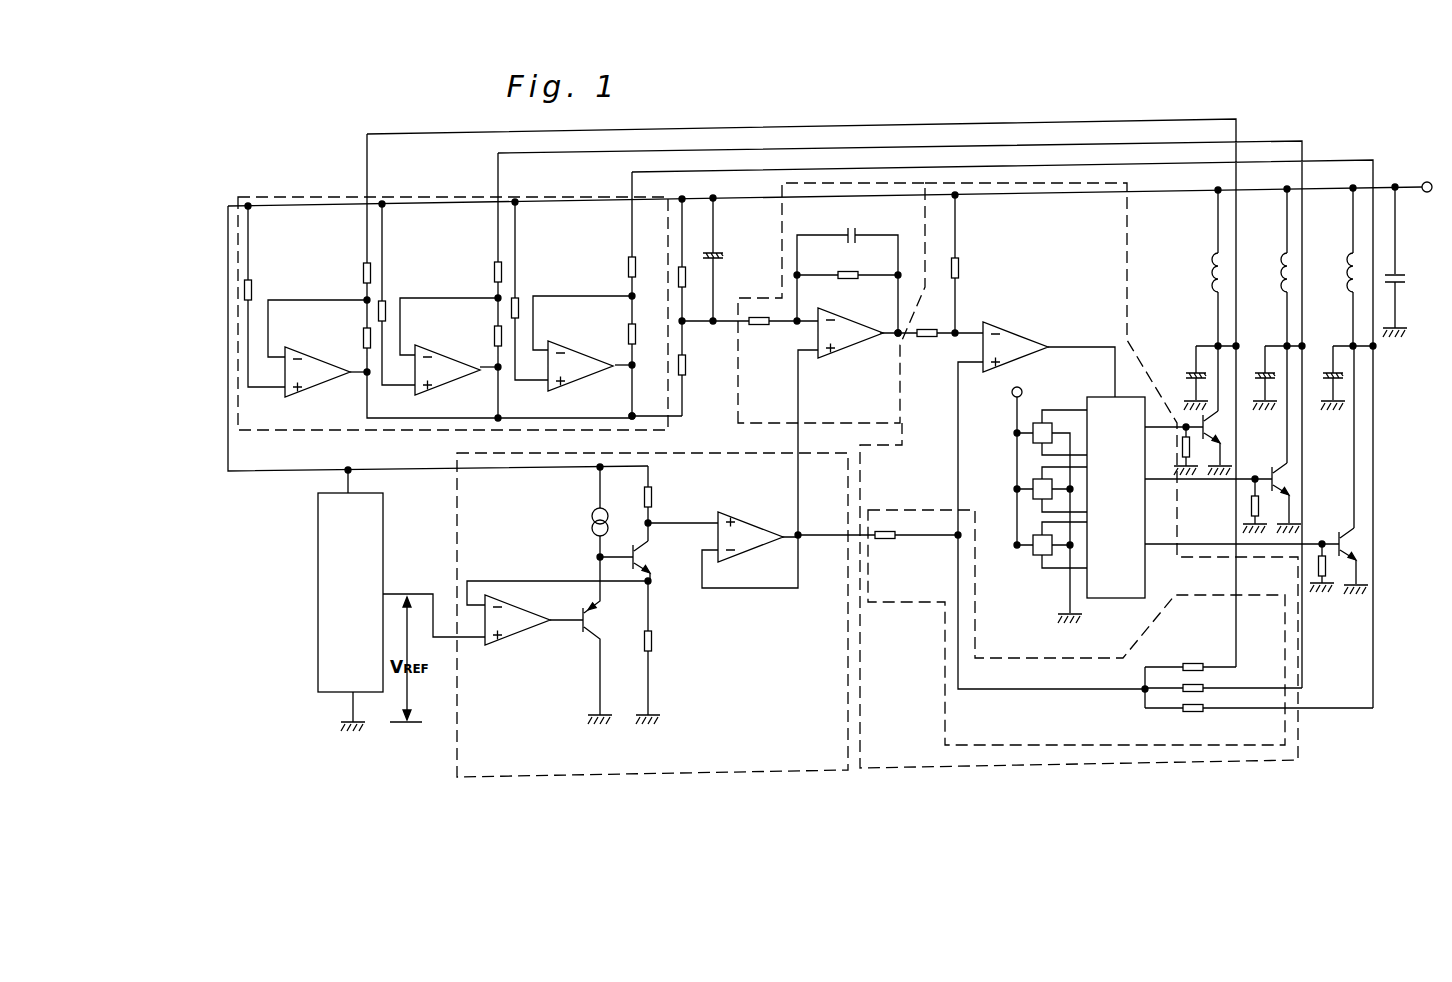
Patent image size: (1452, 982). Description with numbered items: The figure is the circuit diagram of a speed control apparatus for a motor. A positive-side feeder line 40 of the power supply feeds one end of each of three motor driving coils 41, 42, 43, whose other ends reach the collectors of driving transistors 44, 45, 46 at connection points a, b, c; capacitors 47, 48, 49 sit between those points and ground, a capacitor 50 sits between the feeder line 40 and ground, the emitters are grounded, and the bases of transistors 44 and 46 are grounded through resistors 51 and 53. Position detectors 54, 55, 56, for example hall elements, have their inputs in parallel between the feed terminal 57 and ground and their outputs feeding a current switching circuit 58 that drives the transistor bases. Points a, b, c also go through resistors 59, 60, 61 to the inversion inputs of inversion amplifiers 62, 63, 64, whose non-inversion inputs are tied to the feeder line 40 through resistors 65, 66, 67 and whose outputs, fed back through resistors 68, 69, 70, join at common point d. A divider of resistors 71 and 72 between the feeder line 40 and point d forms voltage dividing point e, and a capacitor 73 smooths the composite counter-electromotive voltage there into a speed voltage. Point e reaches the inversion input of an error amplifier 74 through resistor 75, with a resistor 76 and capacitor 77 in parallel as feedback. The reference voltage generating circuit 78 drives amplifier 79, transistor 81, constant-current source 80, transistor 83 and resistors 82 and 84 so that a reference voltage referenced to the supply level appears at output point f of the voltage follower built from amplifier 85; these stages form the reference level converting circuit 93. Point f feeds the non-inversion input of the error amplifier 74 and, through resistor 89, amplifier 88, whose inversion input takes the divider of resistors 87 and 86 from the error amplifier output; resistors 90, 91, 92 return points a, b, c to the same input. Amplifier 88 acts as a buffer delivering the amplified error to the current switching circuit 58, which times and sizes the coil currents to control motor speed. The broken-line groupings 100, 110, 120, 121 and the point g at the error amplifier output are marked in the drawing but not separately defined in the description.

The positive-side feeder line 40 is at (1382, 186).
The motor driving coil 41 is at (1212, 268).
The motor driving coil 42 is at (1280, 268).
The motor driving coil 43 is at (1348, 268).
The driving transistor 44 is at (1190, 412).
The driving transistor 45 is at (1270, 470).
The driving transistor 46 is at (1345, 525).
The capacitor 47 is at (1192, 370).
The capacitor 48 is at (1262, 372).
The capacitor 49 is at (1333, 372).
The capacitor 50 is at (1405, 285).
The resistor 51 is at (1195, 460).
The resistor 53 is at (1327, 580).
The position detector 54 is at (1033, 437).
The position detector 55 is at (1033, 493).
The position detector 56 is at (1033, 548).
The feed terminal 57 is at (1022, 392).
The current switching circuit 58 is at (1118, 598).
The resistor 59 is at (363, 272).
The resistor 60 is at (495, 270).
The resistor 61 is at (630, 262).
The inversion amplifier 62 is at (320, 383).
The inversion amplifier 63 is at (458, 380).
The inversion amplifier 64 is at (598, 378).
The resistor 65 is at (254, 285).
The resistor 66 is at (385, 305).
The resistor 67 is at (518, 300).
The resistor 68 is at (362, 338).
The resistor 69 is at (495, 336).
The resistor 70 is at (628, 334).
The resistor 71 is at (680, 277).
The resistor 72 is at (685, 368).
The capacitor 73 is at (718, 252).
The error amplifier 74 is at (848, 355).
The resistor 75 is at (760, 325).
The resistor 76 is at (853, 280).
The capacitor 77 is at (858, 236).
The reference voltage generating circuit 78 is at (318, 640).
The amplifier 79 is at (530, 640).
The constant-current source 80 is at (592, 518).
The transistor 81 is at (600, 625).
The resistor 82 is at (652, 500).
The transistor 83 is at (648, 560).
The resistor 84 is at (652, 645).
The amplifier 85 is at (755, 522).
The resistor 86 is at (958, 262).
The resistor 87 is at (930, 338).
The amplifier 88 is at (1022, 332).
The resistor 89 is at (887, 538).
The resistor 90 is at (1195, 663).
The resistor 91 is at (1208, 688).
The resistor 92 is at (1208, 711).
The reference level converting circuit 93 is at (725, 775).
The position detecting circuit 100 is at (330, 432).
The amplifier circuit 110 is at (773, 426).
The drive circuit 120 is at (1000, 770).
The current distribution circuit 121 is at (945, 625).
The connection point a is at (1210, 343).
The connection point b is at (1290, 343).
The connection point c is at (1355, 343).
The common connection point d is at (635, 414).
The voltage dividing point e is at (685, 325).
The output point f is at (800, 540).
The node g is at (895, 337).